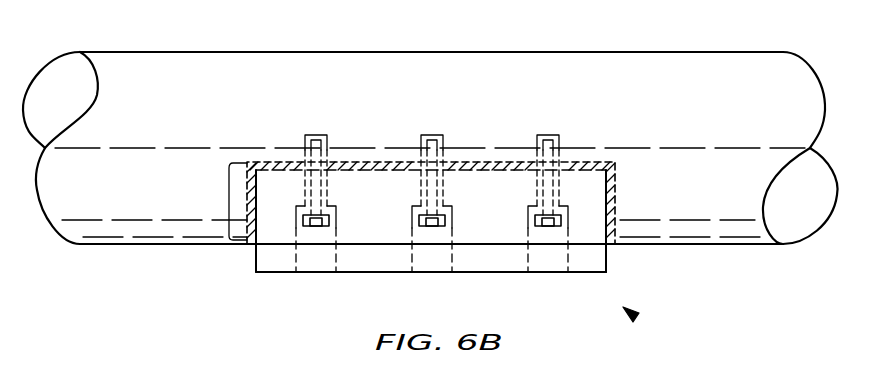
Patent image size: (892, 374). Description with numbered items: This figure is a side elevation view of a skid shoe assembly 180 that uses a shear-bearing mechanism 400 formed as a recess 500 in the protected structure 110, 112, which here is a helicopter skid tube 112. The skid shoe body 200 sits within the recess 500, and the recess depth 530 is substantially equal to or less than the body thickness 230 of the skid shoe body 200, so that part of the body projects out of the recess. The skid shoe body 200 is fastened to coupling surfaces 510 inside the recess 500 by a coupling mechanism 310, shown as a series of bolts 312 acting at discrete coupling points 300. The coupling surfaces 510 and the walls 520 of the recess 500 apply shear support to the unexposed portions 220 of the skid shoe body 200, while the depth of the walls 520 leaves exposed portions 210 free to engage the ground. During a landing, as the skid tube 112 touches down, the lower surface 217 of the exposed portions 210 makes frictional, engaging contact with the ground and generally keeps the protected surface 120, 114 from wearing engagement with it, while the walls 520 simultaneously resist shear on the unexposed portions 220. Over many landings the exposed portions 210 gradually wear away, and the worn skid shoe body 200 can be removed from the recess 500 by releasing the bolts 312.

The protected structure 110 is at (430, 128).
The helicopter skid tube 112 is at (256, 52).
The protected surface 114 is at (166, 245).
The protected surface 120 is at (420, 221).
The skid shoe assembly 180 is at (636, 318).
The skid shoe body 200 is at (470, 238).
The exposed portions 210 is at (357, 262).
The lower surface 217 is at (518, 272).
The unexposed portions 220 is at (356, 190).
The body thickness 230 is at (613, 237).
The coupling points 300 is at (295, 248).
The coupling mechanism 310 is at (373, 249).
The bolt 312 is at (535, 226).
The shear-bearing mechanism 400 is at (591, 168).
The recess 500 is at (479, 160).
The coupling surfaces 510 is at (347, 162).
The walls 520 is at (247, 185).
The recess depth 530 is at (240, 217).